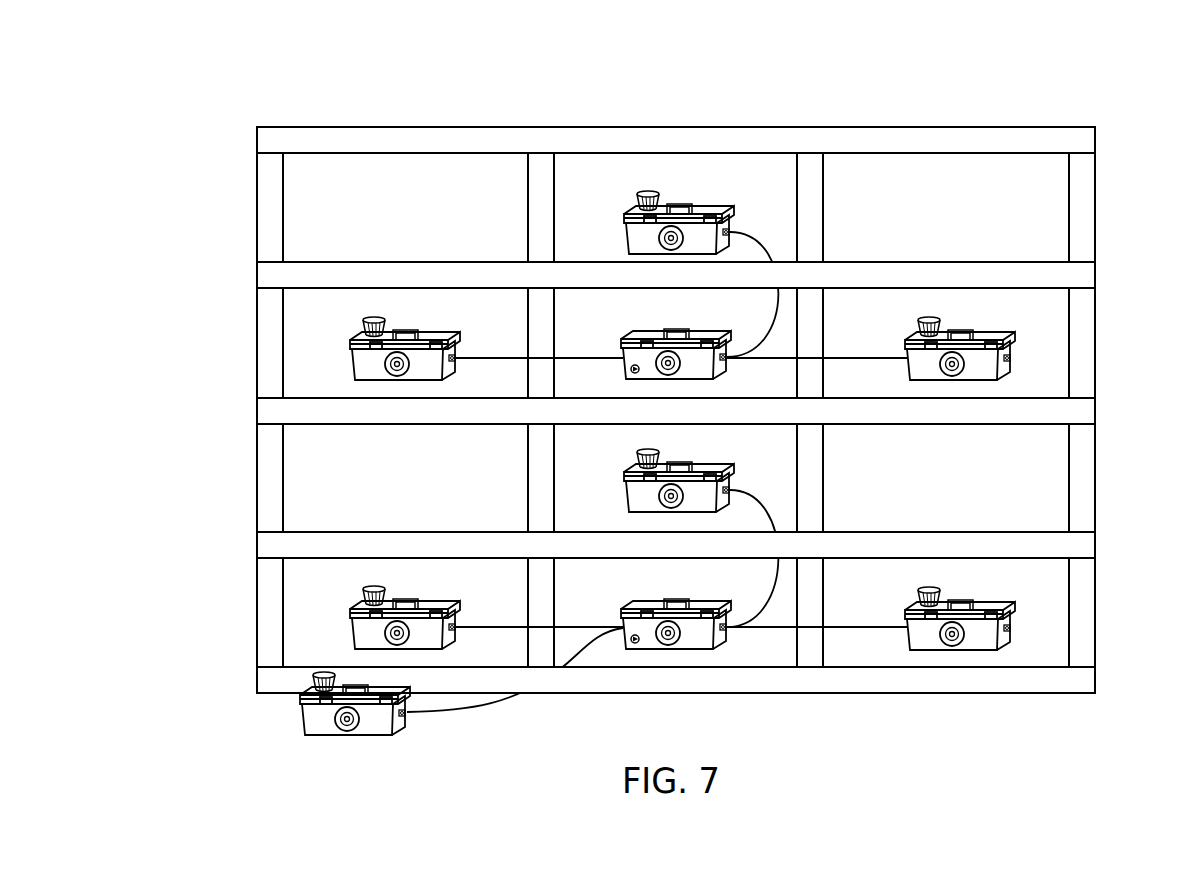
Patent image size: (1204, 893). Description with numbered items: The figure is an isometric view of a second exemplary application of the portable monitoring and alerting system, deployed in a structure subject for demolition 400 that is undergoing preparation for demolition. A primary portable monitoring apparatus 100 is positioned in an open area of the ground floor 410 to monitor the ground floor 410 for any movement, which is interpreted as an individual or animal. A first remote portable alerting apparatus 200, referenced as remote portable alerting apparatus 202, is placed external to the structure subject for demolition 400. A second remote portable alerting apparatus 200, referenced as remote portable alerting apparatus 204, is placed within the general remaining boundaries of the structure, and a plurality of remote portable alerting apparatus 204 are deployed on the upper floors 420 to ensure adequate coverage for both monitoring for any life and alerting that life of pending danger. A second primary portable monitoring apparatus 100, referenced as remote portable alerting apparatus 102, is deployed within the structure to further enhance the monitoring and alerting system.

The primary portable monitoring apparatus 100 is at (630, 656).
The second primary portable monitoring apparatus 102 is at (630, 386).
The remote portable alerting apparatus 200 is at (953, 459).
The remote portable alerting apparatus 202 is at (303, 737).
The remote portable alerting apparatus 204 is at (632, 256).
The structure subject for demolition 400 is at (675, 363).
The ground floor 410 is at (1037, 667).
The upper floors 420 is at (1037, 262).